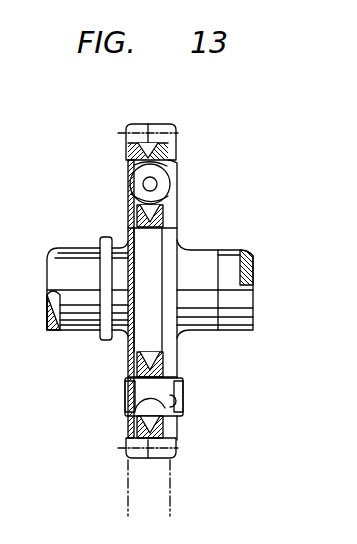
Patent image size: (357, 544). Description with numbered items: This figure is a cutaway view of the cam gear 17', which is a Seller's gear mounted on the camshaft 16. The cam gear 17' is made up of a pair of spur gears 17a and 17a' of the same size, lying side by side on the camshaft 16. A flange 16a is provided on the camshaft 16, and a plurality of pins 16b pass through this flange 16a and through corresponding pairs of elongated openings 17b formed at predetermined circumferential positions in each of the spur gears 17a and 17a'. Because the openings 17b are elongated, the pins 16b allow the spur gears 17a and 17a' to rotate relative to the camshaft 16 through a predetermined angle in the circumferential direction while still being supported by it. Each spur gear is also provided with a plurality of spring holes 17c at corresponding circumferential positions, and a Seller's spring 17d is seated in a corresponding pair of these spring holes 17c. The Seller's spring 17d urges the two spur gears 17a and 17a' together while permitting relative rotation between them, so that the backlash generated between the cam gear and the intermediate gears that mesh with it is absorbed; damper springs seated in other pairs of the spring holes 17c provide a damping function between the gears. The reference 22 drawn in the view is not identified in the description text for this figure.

The cam gear 17' is at (164, 123).
The spur gear 17a is at (96, 287).
The spur gear 17a' is at (206, 287).
The Seller's spring 17d is at (160, 180).
The spring holes 17c is at (161, 201).
The flange 16a is at (180, 229).
The camshaft 16 is at (240, 301).
The elongated openings 17b is at (143, 405).
The pins 16b is at (178, 396).
The shaft axis 22 is at (172, 501).